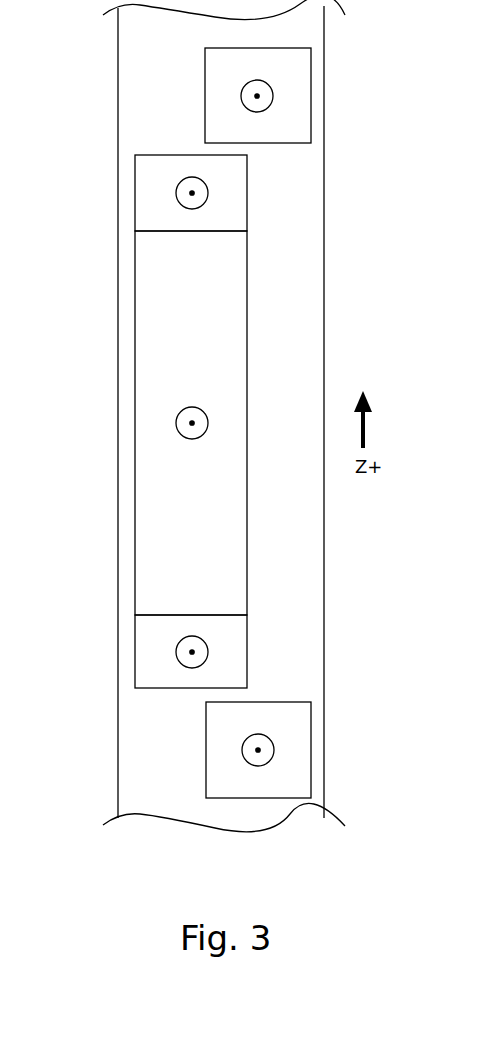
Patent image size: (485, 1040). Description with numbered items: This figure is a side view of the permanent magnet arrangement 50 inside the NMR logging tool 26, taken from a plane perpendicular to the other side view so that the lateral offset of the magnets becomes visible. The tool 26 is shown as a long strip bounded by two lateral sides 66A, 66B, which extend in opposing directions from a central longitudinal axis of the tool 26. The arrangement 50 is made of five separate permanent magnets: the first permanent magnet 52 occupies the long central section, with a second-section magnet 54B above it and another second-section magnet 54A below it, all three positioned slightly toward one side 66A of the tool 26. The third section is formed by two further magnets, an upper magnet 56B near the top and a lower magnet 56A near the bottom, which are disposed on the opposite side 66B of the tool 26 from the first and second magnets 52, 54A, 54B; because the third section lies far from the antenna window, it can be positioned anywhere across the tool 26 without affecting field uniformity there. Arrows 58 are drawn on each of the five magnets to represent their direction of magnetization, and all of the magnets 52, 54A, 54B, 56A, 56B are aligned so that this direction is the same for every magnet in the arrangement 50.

The NMR logging tool 26 is at (220, 416).
The permanent magnet arrangement 50 is at (147, 421).
The first permanent magnet 52 is at (135, 405).
The second section magnet 54A is at (135, 655).
The second section magnet 54B is at (134, 202).
The third section magnet 56A is at (311, 788).
The third section magnet 56B is at (311, 58).
The arrows 58 is at (257, 96).
The side of NMR tool 66A is at (112, 172).
The opposite side of NMR tool 66B is at (330, 159).